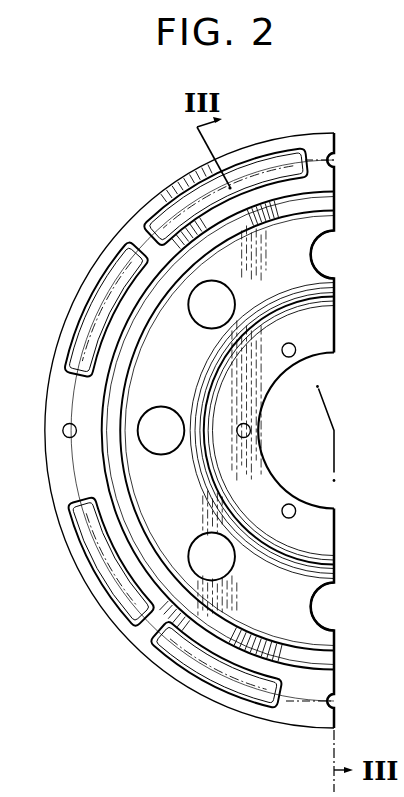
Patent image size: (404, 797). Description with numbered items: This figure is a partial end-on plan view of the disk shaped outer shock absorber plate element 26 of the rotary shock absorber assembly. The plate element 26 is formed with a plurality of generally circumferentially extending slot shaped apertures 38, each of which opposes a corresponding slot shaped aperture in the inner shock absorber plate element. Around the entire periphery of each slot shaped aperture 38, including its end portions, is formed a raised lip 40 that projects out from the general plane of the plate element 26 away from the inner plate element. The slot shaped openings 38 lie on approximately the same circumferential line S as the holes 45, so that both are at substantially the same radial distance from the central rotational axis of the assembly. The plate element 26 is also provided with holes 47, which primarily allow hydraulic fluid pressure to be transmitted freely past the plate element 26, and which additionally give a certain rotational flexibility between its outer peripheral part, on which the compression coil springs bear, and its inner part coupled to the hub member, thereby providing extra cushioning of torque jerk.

The outer shock absorber plate element 26 is at (125, 226).
The circumferentially extending slot shaped aperture 38 is at (166, 203).
The raised lip 40 is at (271, 153).
The circumferential line S is at (78, 355).
The hole 45 is at (61, 432).
The hole 47 is at (321, 252).